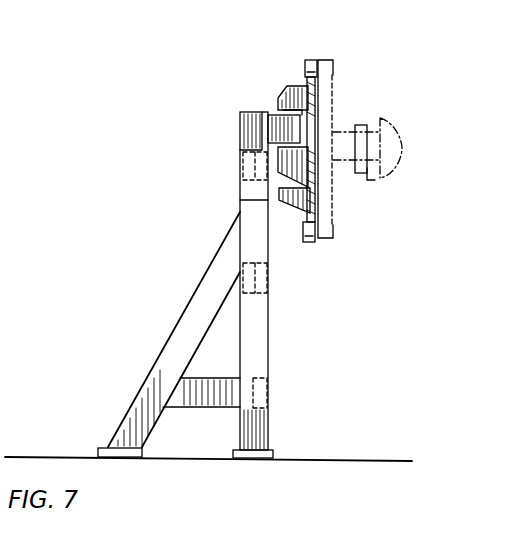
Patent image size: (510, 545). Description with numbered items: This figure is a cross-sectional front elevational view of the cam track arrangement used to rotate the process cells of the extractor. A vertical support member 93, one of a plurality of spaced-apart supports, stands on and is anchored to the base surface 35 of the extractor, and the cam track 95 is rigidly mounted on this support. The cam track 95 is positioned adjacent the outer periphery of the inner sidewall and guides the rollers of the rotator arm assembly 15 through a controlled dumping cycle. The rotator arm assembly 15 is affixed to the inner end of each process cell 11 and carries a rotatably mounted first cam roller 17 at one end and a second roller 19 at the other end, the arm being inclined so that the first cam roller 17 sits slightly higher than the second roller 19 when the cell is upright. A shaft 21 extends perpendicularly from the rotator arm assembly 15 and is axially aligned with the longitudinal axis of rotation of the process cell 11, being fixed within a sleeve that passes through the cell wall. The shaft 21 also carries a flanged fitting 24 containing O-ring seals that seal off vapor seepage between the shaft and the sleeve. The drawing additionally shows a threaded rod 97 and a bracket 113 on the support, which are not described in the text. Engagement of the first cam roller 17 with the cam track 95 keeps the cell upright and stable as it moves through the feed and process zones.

The process cell 11 is at (397, 155).
The rotator arm assembly 15 is at (335, 74).
The first cam roller 17 is at (313, 60).
The second roller 19 is at (311, 242).
The shaft 21 is at (340, 132).
The flanged fitting 24 is at (367, 173).
The base surface 35 is at (347, 460).
The vertical support member 93 is at (262, 343).
The cam track 95 is at (279, 88).
The threaded rod 97 is at (306, 80).
The mounting bracket 113 is at (313, 143).